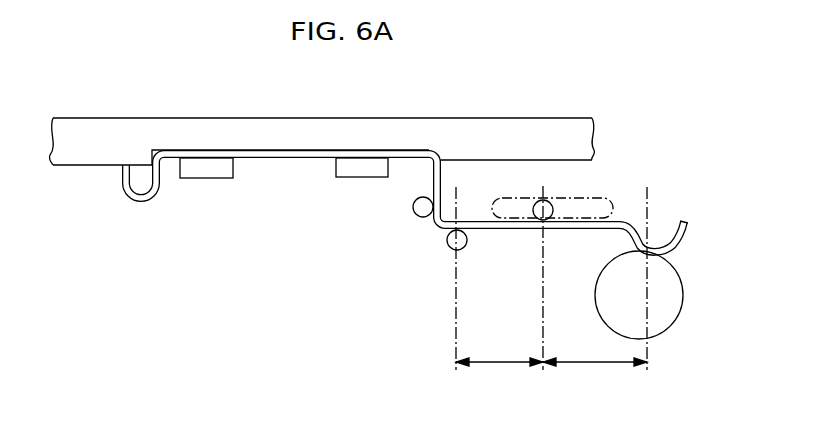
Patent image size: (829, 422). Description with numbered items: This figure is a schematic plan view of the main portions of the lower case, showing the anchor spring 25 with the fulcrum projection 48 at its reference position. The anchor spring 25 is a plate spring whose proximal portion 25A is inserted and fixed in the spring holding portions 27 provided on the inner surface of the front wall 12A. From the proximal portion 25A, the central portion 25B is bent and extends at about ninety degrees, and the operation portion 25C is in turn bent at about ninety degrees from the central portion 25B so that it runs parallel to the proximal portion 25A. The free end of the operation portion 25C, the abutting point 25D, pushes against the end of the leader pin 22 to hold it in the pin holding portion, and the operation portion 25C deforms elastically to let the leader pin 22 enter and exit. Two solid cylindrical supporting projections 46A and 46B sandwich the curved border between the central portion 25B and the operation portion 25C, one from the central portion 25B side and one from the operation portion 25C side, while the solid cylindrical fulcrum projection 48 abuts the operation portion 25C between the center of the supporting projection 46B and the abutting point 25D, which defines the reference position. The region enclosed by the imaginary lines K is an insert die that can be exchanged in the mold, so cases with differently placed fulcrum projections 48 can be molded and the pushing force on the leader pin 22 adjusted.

The front wall 12A is at (332, 125).
The anchor spring 25 is at (152, 201).
The proximal portion 25A is at (246, 156).
The central portion 25B is at (433, 178).
The operation portion 25C is at (594, 229).
The abutting point 25D is at (666, 262).
The spring holding portions 27 is at (203, 174).
The supporting projection 46A is at (423, 207).
The supporting projection 46B is at (447, 242).
The fulcrum projection 48 is at (541, 214).
The imaginary lines K is at (583, 197).
The leader pin 22 is at (667, 312).